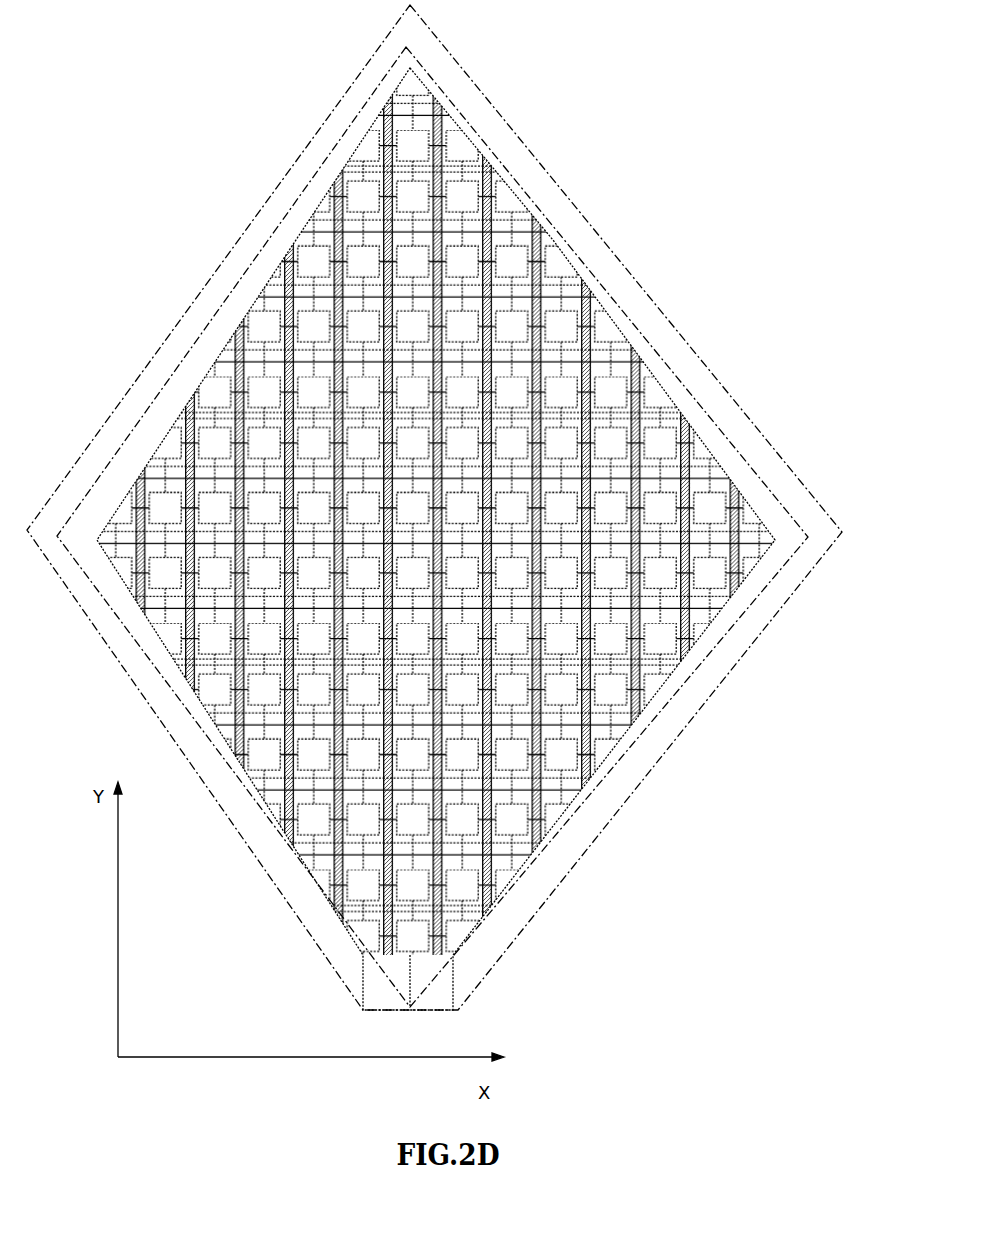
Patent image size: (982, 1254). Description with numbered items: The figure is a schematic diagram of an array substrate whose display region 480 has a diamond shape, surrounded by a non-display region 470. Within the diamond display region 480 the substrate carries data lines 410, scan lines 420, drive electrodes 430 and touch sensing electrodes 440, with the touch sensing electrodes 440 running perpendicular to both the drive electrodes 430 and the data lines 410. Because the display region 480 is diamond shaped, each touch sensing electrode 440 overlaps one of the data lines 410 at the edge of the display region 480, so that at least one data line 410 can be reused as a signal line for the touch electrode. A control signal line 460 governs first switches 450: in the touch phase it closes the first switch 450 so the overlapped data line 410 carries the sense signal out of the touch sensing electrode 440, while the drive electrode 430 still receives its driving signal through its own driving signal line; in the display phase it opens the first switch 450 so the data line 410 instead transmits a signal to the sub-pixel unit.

The data line 410 is at (302, 232).
The scan line 420 is at (395, 150).
The drive electrode 430 is at (455, 122).
The touch sensing electrode 440 is at (513, 255).
The first switch 450 is at (575, 272).
The control signal line 460 is at (652, 347).
The non-display region 470 is at (710, 430).
The display region 480 is at (510, 200).